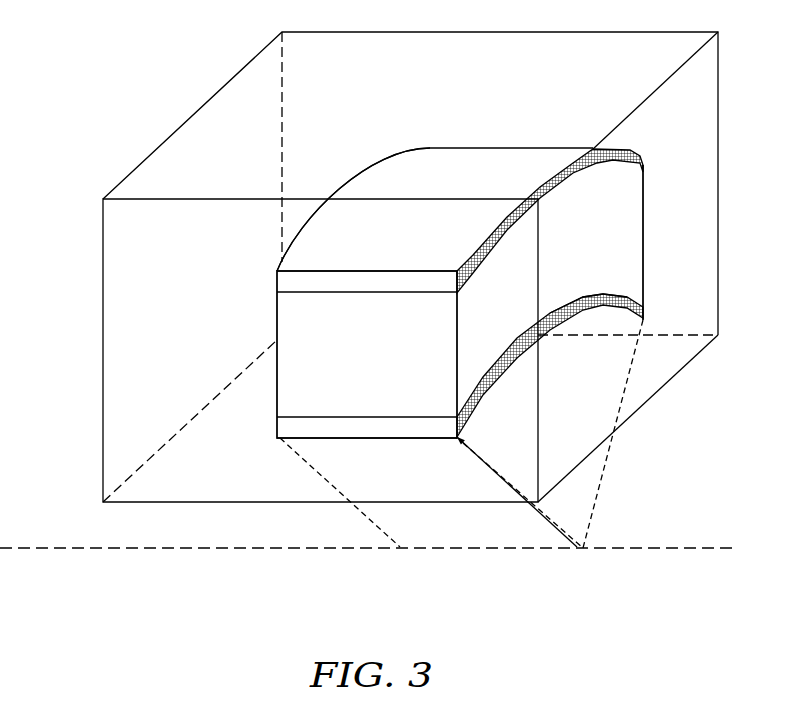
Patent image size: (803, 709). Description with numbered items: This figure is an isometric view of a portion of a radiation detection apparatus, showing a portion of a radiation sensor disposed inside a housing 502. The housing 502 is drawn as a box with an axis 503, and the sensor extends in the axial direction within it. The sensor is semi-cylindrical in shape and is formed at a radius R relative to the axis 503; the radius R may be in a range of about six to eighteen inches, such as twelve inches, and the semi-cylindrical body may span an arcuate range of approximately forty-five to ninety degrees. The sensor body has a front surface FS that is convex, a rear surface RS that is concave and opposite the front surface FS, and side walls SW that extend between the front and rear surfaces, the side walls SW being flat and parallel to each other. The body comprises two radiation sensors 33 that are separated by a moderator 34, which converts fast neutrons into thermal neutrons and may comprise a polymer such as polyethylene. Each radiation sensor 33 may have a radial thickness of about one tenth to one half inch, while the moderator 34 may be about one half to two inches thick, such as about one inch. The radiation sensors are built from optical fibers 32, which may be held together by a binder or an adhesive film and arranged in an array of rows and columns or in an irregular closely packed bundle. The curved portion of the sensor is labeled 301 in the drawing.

The bent laminated segment 301 is at (553, 80).
The optical fibers 32 is at (637, 153).
The radiation sensors 33 is at (556, 310).
The moderator 34 is at (632, 222).
The housing 502 is at (102, 422).
The axis 503 is at (650, 550).
The front surface FS is at (392, 184).
The side walls SW is at (288, 395).
The rear surface RS is at (570, 326).
The radius R is at (517, 492).